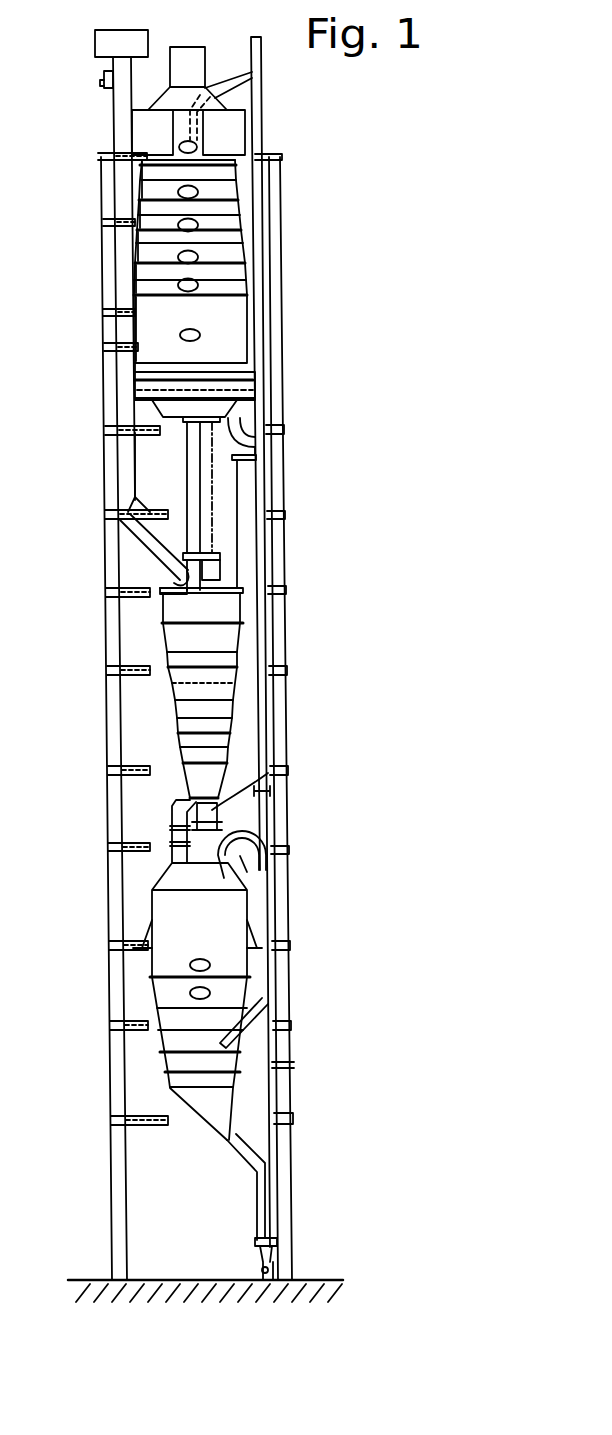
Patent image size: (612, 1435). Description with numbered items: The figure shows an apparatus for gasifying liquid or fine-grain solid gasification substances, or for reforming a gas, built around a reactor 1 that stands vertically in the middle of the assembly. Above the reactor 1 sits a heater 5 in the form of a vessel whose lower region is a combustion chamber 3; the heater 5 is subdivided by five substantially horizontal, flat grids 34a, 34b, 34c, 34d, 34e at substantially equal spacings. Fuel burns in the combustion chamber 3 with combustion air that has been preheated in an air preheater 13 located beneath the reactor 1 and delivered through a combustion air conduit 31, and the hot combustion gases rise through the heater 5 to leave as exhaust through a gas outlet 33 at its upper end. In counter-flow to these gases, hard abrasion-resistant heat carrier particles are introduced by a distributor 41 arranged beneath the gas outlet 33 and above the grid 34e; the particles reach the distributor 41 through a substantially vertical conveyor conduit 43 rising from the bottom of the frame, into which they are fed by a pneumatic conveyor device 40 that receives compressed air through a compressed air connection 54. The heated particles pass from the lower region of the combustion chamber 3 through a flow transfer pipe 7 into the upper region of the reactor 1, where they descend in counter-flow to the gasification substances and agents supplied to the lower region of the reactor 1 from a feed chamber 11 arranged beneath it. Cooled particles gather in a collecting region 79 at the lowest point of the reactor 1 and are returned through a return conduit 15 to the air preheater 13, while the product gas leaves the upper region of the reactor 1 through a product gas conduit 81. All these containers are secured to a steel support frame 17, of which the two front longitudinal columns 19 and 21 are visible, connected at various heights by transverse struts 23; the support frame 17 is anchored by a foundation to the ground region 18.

The reactor 1 is at (220, 707).
The combustion chamber 3 is at (233, 338).
The heater 5 is at (233, 283).
The flow transfer pipe 7 is at (195, 482).
The feed chamber 11 is at (260, 840).
The air preheater 13 is at (232, 915).
The return conduit 15 is at (177, 827).
The support frame 17 is at (310, 1036).
The ground region 18 is at (92, 1293).
The column 19 is at (287, 1143).
The column 21 is at (118, 1183).
The transverse struts 23 is at (127, 586).
The combustion air conduit 31 is at (248, 557).
The gas outlet 33 is at (194, 60).
The grid 34a is at (148, 318).
The grid 34b is at (146, 282).
The grid 34c is at (146, 249).
The grid 34d is at (146, 212).
The grid 34e is at (146, 175).
The pneumatic conveyor device 40 is at (270, 1252).
The distributor 41 is at (190, 147).
The conveyor conduit 43 is at (275, 1065).
The compressed air connection 54 is at (262, 1270).
The collecting region 79 is at (277, 770).
The product gas conduit 81 is at (125, 452).